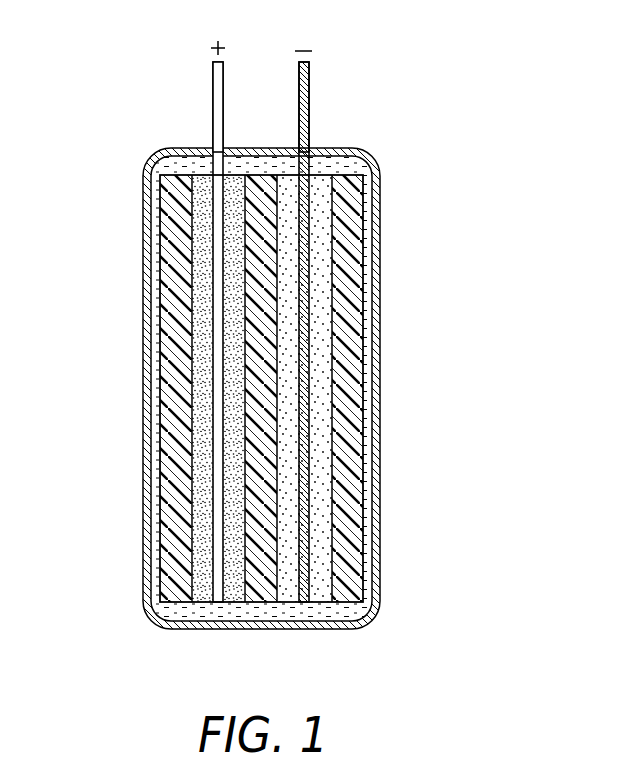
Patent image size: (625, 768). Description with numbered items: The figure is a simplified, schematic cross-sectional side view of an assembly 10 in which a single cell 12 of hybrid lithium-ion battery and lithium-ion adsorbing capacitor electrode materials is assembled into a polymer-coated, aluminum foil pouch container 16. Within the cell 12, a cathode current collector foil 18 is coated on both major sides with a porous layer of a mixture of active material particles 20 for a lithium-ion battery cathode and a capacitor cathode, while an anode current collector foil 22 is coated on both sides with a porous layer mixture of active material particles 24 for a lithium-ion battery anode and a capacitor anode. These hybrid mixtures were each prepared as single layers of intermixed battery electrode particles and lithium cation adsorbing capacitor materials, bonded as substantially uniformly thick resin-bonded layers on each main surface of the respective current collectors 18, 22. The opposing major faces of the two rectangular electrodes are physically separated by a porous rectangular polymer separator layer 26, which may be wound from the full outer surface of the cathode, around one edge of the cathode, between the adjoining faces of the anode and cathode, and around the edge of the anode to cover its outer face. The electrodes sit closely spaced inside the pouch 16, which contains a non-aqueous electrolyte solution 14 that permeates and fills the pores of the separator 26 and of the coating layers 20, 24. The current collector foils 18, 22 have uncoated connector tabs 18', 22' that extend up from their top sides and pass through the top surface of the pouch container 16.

The assembly 10 is at (283, 360).
The cell 12 is at (233, 360).
The non-aqueous electrolyte solution 14 is at (365, 548).
The pouch container 16 is at (380, 403).
The cathode current collector foil 18 is at (157, 332).
The tab 18' is at (173, 96).
The active material particles 20 is at (237, 398).
The anode current collector foil 22 is at (192, 332).
The tab 22' is at (354, 88).
The active material particles 24 is at (320, 553).
The porous polymer separator layer 26 is at (172, 290).